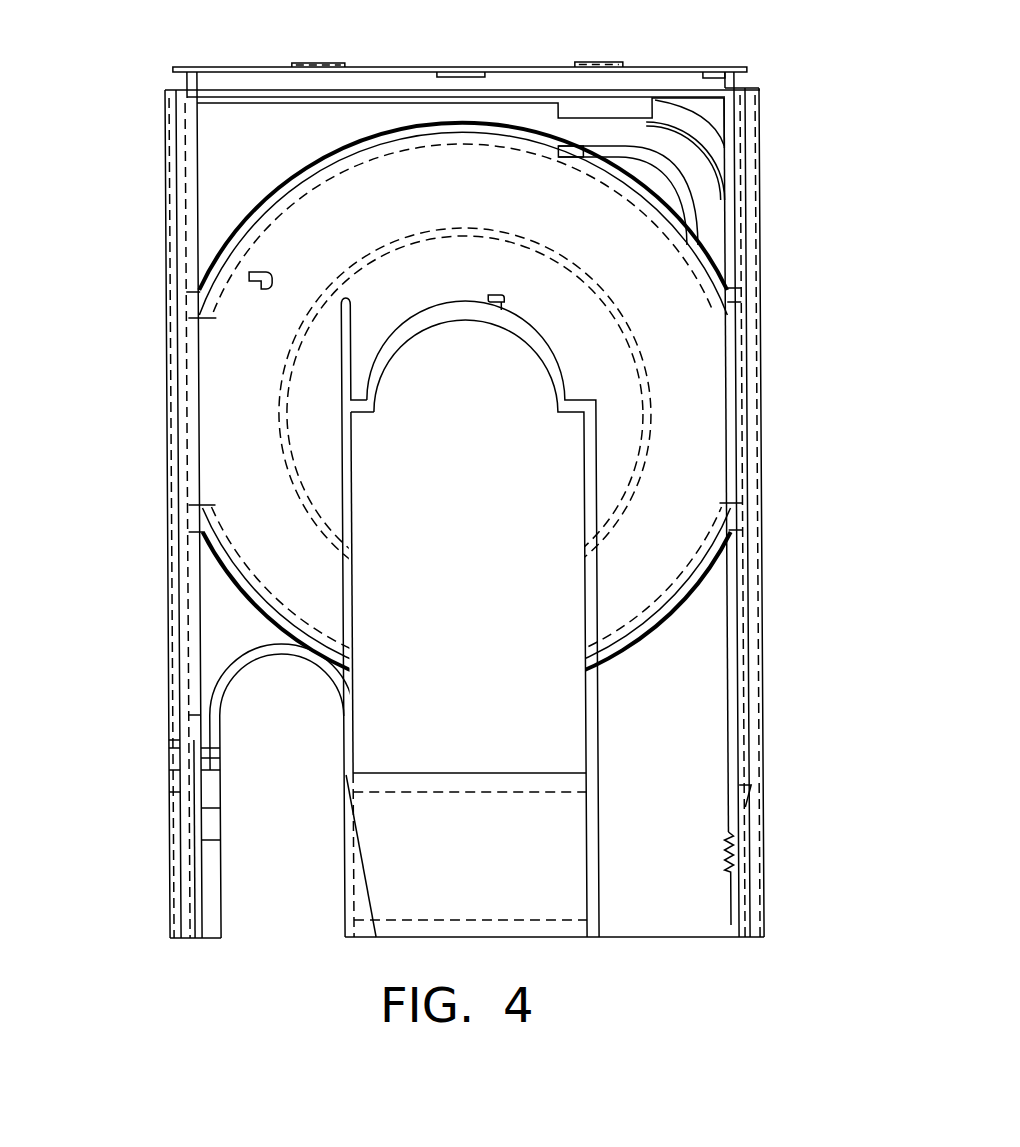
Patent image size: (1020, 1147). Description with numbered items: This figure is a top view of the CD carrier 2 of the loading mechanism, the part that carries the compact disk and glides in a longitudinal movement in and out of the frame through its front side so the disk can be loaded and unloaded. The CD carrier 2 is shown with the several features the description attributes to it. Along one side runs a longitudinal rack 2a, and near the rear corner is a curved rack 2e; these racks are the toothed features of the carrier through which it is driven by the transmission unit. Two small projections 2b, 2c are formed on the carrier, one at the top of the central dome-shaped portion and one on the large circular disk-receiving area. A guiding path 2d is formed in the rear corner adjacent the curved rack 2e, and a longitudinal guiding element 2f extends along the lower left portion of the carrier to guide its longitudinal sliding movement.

The CD carrier 2 is at (705, 445).
The longitudinal rack 2a is at (727, 860).
The projection 2b is at (500, 303).
The projection 2c is at (250, 272).
The guiding path 2d is at (702, 180).
The curved rack 2e is at (646, 122).
The longitudinal guiding element 2f is at (340, 473).